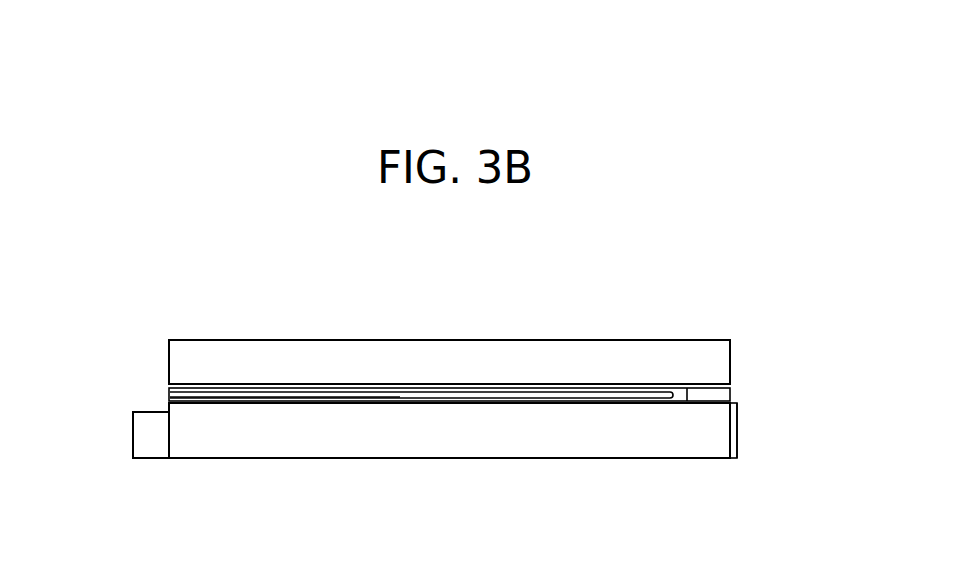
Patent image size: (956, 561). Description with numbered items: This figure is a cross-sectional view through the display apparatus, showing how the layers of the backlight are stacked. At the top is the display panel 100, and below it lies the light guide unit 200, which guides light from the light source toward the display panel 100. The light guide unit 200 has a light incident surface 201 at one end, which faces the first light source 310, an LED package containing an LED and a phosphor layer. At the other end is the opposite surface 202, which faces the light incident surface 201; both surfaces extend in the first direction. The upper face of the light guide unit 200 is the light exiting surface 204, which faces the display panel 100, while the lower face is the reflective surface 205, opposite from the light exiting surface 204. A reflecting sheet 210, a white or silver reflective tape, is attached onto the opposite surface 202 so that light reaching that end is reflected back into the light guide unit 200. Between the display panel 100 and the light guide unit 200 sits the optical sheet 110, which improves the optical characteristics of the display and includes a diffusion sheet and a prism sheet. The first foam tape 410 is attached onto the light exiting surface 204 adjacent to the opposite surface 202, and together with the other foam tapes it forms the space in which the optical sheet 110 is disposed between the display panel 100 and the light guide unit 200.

The display panel 100 is at (726, 354).
The first foam tape 410 is at (726, 390).
The light exiting surface 204 is at (537, 398).
The light guide unit 200 is at (626, 448).
The reflecting sheet 210 is at (737, 418).
The opposite surface 202 is at (737, 447).
The first light source 310 is at (140, 422).
The light incident surface 201 is at (168, 435).
The optical sheet 110 is at (396, 397).
The reflective surface 205 is at (536, 460).